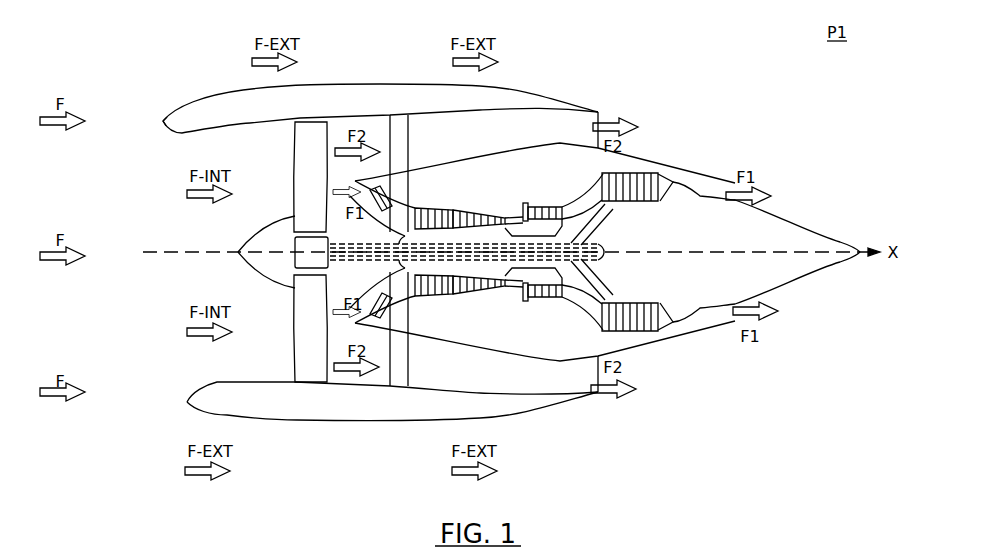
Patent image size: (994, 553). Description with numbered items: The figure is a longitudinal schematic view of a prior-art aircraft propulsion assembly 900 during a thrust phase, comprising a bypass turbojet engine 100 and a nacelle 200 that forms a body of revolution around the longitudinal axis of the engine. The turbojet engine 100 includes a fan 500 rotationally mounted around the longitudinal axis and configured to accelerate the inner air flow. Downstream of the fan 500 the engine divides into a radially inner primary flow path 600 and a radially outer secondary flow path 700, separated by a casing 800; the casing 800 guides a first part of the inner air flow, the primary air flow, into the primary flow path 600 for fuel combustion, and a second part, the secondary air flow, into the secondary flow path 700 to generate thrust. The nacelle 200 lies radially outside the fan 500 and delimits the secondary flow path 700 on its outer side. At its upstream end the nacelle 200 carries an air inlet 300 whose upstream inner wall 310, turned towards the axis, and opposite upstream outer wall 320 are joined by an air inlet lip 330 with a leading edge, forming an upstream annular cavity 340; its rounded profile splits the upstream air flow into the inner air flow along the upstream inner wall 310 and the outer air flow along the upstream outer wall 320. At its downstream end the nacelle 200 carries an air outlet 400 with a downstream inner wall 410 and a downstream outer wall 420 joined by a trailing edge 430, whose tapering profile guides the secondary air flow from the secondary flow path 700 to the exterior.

The bypass turbojet engine 100 is at (733, 153).
The nacelle 200 is at (288, 425).
The air inlet 300 is at (215, 72).
The upstream inner wall 310 is at (172, 135).
The upstream outer wall 320 is at (182, 107).
The air inlet lip 330 is at (160, 122).
The upstream annular cavity 340 is at (214, 122).
The air outlet 400 is at (555, 57).
The downstream inner wall 410 is at (539, 251).
The downstream outer wall 420 is at (567, 114).
The trailing edge 430 is at (600, 113).
The fan 500 is at (310, 388).
The primary flow path 600 is at (428, 287).
The secondary flow path 700 is at (517, 386).
The casing 800 is at (517, 331).
The aircraft propulsion assembly 900 is at (789, 139).